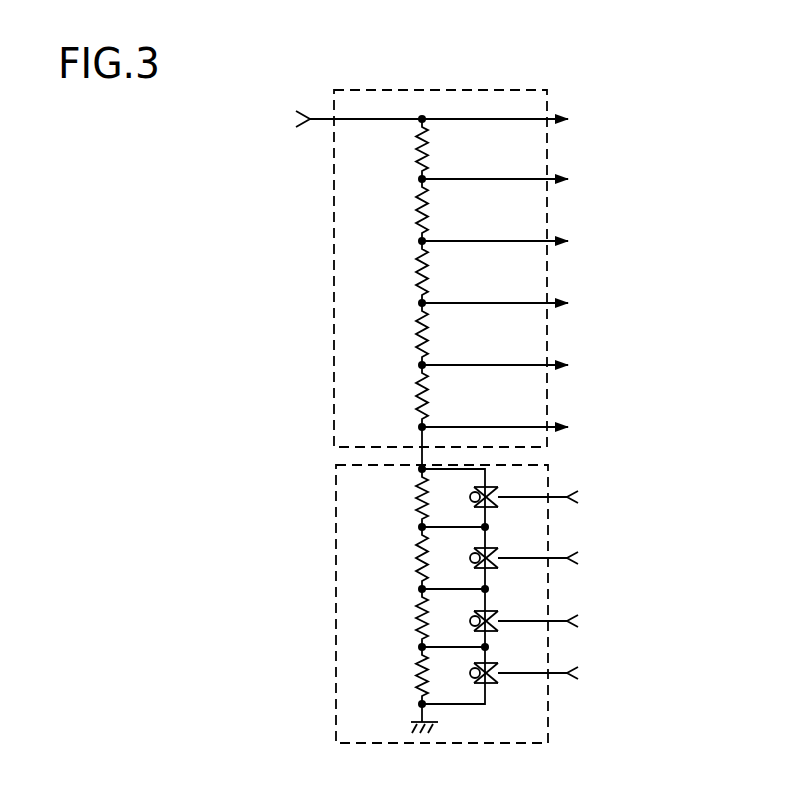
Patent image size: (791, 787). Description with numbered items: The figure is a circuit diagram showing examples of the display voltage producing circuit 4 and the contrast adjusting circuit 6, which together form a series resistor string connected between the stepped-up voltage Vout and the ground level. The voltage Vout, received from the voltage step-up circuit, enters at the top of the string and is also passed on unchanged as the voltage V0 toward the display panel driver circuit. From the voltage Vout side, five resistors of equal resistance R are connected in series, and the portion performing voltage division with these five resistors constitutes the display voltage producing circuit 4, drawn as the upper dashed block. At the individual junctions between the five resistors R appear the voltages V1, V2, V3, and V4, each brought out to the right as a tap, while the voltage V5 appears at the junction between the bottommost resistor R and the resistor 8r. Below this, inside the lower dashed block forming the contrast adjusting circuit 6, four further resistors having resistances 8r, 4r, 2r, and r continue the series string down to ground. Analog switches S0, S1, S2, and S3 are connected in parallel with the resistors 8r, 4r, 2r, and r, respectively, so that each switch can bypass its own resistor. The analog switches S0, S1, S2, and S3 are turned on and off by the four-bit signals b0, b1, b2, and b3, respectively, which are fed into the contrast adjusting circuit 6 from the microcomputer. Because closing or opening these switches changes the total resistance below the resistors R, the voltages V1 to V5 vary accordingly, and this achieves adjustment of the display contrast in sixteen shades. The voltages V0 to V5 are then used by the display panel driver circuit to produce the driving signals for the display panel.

The display voltage producing circuit 4 is at (348, 233).
The contrast adjusting circuit 6 is at (358, 576).
The voltage Vout is at (403, 124).
The voltage V0 is at (586, 119).
The voltage V1 is at (519, 179).
The voltage V2 is at (519, 241).
The voltage V3 is at (519, 303).
The voltage V4 is at (519, 365).
The voltage V5 is at (519, 427).
The resistor 8r is at (403, 498).
The resistor 4r is at (404, 558).
The resistor 2r is at (404, 618).
The resistor r is at (410, 675).
The analog switch S0 is at (499, 511).
The analog switch S1 is at (499, 571).
The analog switch S2 is at (499, 634).
The analog switch S3 is at (499, 686).
The signal b0 is at (558, 498).
The signal b1 is at (558, 559).
The signal b2 is at (558, 623).
The signal b3 is at (558, 676).